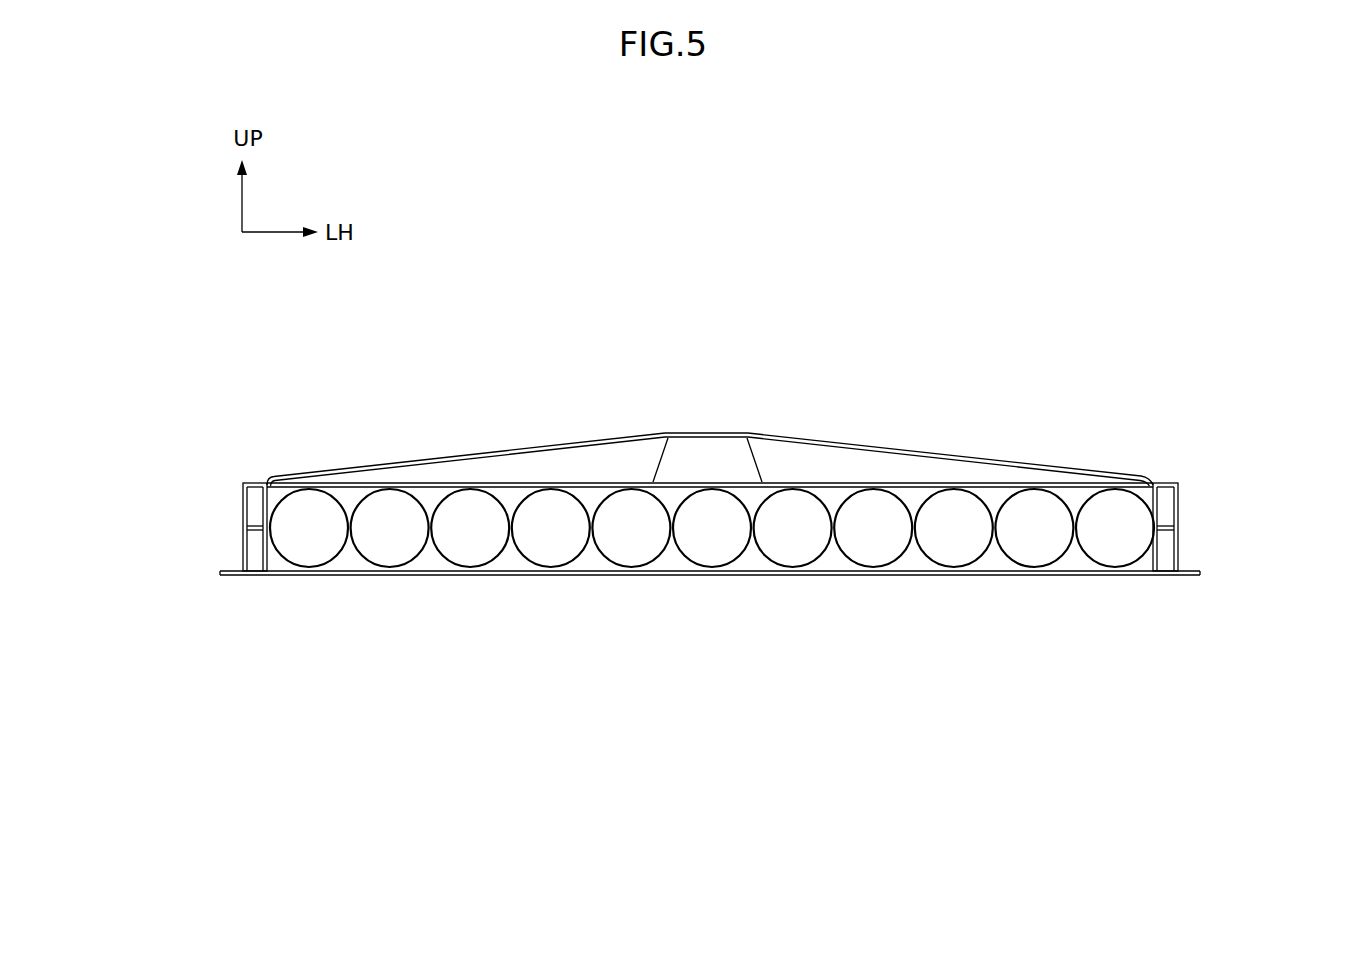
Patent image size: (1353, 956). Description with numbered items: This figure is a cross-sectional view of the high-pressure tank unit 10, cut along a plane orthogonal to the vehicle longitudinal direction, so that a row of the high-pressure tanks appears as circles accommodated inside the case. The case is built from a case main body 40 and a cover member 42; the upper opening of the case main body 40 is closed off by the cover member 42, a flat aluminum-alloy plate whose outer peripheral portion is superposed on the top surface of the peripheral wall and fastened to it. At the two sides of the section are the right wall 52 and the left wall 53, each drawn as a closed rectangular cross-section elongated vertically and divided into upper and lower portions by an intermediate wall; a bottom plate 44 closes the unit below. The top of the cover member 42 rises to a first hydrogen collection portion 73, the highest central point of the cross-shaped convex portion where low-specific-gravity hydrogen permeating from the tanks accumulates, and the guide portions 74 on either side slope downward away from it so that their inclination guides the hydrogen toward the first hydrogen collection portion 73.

The high-pressure tank unit 10 is at (1026, 302).
The case main body 40 is at (874, 583).
The cover member 42 is at (884, 440).
The bottom wall 44 is at (663, 576).
The right wall 52 is at (243, 505).
The left wall 53 is at (1178, 513).
The first hydrogen collection portion 73 is at (706, 432).
The guide portions 74 is at (477, 456).